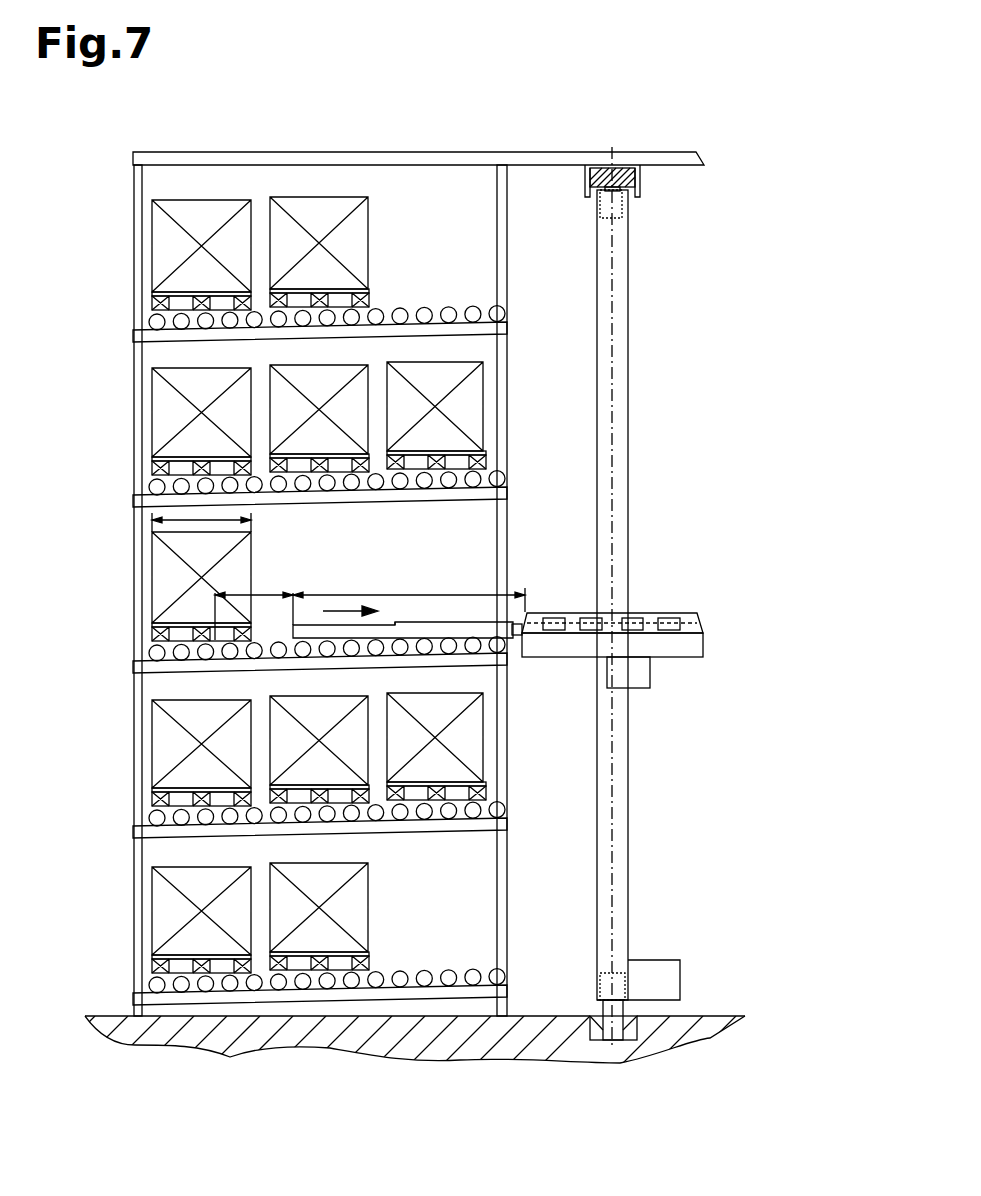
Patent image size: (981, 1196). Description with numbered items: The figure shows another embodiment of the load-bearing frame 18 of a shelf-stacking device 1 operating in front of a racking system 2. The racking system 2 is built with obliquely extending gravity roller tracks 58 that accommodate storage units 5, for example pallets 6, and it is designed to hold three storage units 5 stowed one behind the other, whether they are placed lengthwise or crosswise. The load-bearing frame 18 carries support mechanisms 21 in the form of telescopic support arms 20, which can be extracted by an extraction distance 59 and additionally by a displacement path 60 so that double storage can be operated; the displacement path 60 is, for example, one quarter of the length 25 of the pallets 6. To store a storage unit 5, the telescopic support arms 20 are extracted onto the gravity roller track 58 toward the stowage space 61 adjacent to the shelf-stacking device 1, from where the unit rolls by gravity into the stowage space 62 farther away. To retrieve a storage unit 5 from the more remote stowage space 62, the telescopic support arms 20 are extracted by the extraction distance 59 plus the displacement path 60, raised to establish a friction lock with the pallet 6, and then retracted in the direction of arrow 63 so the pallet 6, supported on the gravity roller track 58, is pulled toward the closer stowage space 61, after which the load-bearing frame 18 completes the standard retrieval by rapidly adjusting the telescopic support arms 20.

The shelf-stacking device 1 is at (718, 105).
The racking system 2 is at (568, 95).
The storage unit 5 is at (345, 138).
The pallet 6 is at (483, 460).
The load-bearing frame 18 is at (678, 570).
The telescopic support arm 20 is at (458, 632).
The support mechanism 21 is at (718, 608).
The length of the pallets 25 is at (197, 518).
The gravity roller track 58 is at (460, 488).
The extraction distance 59 is at (396, 593).
The displacement path 60 is at (258, 592).
The stowage space 61 is at (463, 603).
The stowage space 62 is at (168, 582).
The arrow 63 is at (337, 608).